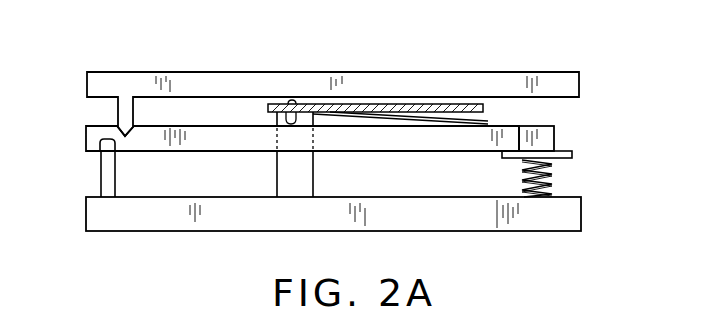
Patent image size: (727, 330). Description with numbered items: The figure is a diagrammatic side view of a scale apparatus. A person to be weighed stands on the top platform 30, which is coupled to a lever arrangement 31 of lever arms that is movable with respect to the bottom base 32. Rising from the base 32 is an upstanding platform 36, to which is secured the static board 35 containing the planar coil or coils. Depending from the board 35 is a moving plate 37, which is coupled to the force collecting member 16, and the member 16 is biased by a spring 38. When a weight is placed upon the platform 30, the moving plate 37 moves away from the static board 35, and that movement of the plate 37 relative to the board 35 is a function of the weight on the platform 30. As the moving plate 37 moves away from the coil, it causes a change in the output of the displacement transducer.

The top platform 30 is at (572, 85).
The lever arrangement 31 is at (88, 130).
The bottom base 32 is at (96, 212).
The static board 35 is at (413, 108).
The upstanding platform 36 is at (306, 179).
The moving plate 37 is at (486, 122).
The force collecting member 16 is at (543, 139).
The spring 38 is at (553, 173).